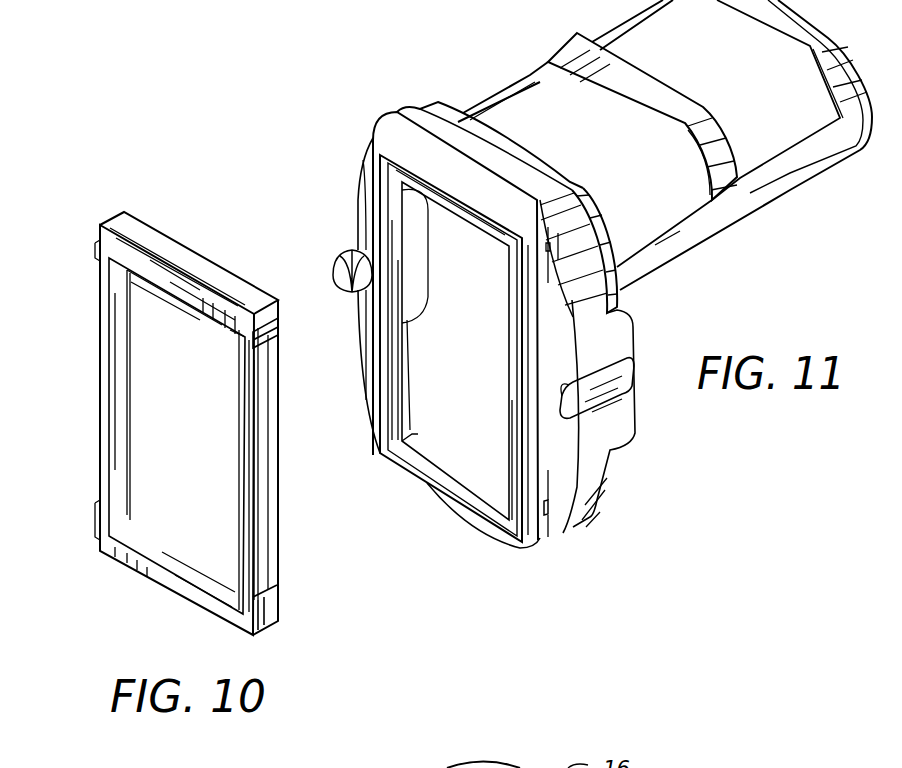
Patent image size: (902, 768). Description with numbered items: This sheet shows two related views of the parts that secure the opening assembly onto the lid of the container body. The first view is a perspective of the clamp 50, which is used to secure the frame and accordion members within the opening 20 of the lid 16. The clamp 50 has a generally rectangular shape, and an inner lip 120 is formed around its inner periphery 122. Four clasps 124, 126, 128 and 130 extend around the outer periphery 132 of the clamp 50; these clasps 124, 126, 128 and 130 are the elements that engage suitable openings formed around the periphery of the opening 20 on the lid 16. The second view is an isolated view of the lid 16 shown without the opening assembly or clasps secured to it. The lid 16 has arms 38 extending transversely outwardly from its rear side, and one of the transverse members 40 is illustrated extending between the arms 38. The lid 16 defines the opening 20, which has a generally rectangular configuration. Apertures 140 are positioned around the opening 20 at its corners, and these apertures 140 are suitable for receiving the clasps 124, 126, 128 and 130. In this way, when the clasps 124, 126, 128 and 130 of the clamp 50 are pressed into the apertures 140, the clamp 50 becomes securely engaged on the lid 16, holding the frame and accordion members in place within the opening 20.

In FIG. 11, the lid 16 is at (370, 214).
In FIG. 11, the opening 20 is at (517, 404).
In FIG. 11, the arms 38 is at (523, 102).
In FIG. 11, the transverse member 40 is at (647, 87).
In FIG. 10, the clamp 50 is at (268, 506).
In FIG. 10, the inner lip 120 is at (122, 475).
In FIG. 10, the inner periphery 122 is at (232, 330).
In FIG. 10, the clasp 124 is at (278, 324).
In FIG. 10, the clasp 126 is at (268, 606).
In FIG. 10, the clasp 128 is at (97, 243).
In FIG. 10, the clasp 130 is at (97, 513).
In FIG. 10, the outer periphery 132 is at (102, 377).
In FIG. 11, the apertures 140 is at (378, 150).